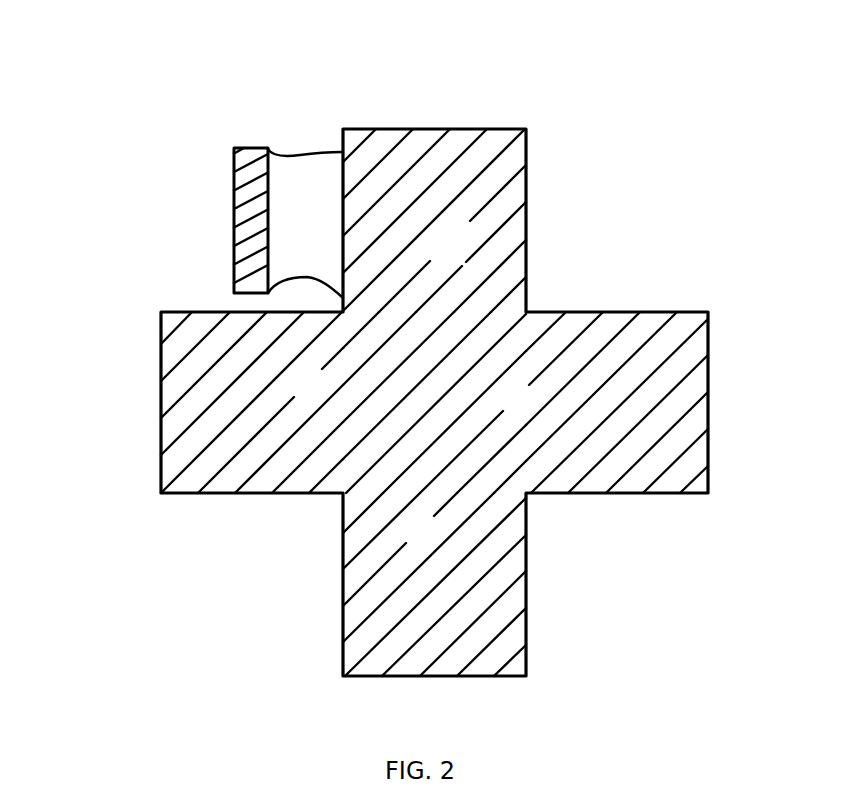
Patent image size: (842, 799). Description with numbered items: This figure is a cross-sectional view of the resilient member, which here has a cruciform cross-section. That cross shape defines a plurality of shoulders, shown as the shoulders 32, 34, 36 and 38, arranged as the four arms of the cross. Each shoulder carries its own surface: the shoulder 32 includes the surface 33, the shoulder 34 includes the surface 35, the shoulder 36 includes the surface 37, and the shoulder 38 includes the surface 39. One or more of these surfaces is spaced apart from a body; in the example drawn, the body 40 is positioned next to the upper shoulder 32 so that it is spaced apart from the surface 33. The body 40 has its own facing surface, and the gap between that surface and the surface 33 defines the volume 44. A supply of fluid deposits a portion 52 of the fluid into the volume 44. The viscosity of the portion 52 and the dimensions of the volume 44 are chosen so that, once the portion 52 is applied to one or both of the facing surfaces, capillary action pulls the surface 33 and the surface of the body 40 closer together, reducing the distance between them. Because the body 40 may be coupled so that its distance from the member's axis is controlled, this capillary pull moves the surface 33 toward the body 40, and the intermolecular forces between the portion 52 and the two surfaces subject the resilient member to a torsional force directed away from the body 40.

The shoulder 32 is at (342, 129).
The surface 33 is at (332, 177).
The shoulder 34 is at (704, 312).
The surface 35 is at (599, 312).
The shoulder 36 is at (343, 676).
The surface 37 is at (552, 595).
The shoulder 38 is at (161, 312).
The surface 39 is at (233, 512).
The body 40 is at (234, 170).
The volume 44 is at (307, 112).
The portion of fluid 52 is at (290, 210).